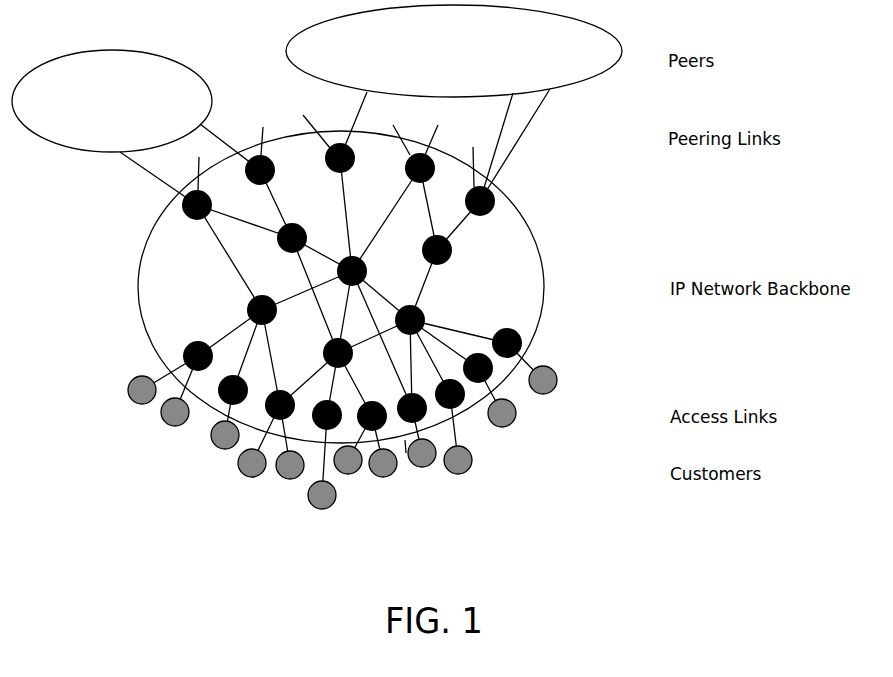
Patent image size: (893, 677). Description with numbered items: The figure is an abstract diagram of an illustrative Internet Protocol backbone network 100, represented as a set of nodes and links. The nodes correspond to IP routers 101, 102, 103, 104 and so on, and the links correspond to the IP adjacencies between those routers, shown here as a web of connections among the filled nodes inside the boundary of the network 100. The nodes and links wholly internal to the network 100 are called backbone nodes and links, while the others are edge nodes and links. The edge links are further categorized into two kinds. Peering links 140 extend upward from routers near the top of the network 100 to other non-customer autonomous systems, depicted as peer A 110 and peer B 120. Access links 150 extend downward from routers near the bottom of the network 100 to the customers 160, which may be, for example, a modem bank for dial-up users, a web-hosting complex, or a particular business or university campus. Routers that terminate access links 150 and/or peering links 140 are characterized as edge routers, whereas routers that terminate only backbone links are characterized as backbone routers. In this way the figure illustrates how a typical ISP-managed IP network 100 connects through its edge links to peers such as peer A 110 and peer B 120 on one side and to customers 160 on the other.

The IP backbone network 100 is at (441, 279).
The IP router 101 is at (242, 310).
The IP router 102 is at (299, 227).
The IP router 103 is at (457, 250).
The IP router 104 is at (453, 320).
The peer A 110 is at (112, 101).
The peer B 120 is at (454, 51).
The peering links 140 is at (353, 147).
The access links 150 is at (365, 413).
The customers 160 is at (342, 437).